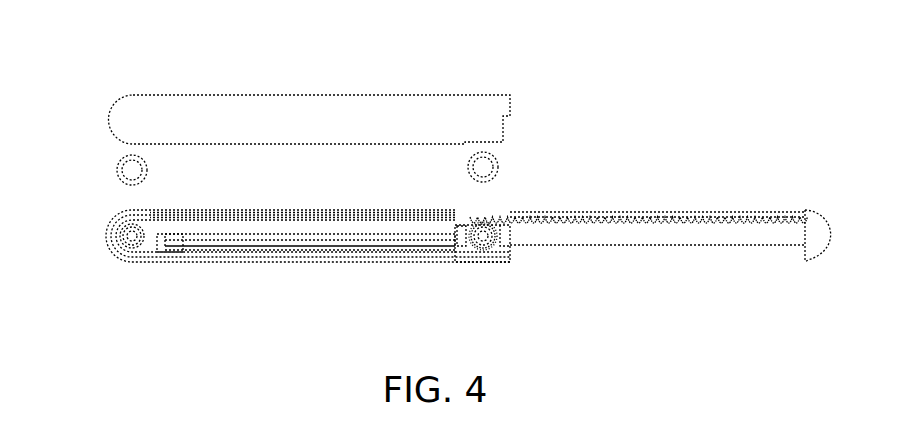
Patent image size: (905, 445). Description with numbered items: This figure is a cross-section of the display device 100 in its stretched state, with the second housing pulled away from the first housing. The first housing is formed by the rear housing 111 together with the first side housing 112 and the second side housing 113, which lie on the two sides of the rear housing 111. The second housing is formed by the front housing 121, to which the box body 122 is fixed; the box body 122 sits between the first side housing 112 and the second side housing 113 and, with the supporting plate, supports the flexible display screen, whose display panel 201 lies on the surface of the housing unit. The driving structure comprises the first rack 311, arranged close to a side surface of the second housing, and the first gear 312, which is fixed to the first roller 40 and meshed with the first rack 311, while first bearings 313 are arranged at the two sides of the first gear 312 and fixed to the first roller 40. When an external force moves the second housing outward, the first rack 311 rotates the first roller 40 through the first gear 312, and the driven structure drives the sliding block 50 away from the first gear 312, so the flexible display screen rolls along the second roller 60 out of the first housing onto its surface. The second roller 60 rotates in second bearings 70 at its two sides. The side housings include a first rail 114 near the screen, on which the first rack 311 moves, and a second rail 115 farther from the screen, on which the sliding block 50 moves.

The display device 100 is at (127, 63).
The first side housing 112 is at (113, 118).
The second bearing 70 is at (117, 170).
The first bearing 313 is at (499, 165).
The rear housing 111 is at (107, 235).
The display panel 201 is at (272, 208).
The first rail 114 is at (348, 225).
The second roller 60 is at (131, 237).
The sliding block 50 is at (168, 243).
The second rail 115 is at (352, 246).
The second side housing 113 is at (243, 246).
The first gear 312 is at (467, 247).
The first roller 40 is at (483, 238).
The box body 122 is at (680, 238).
The first rack 311 is at (633, 218).
The front housing 121 is at (823, 240).